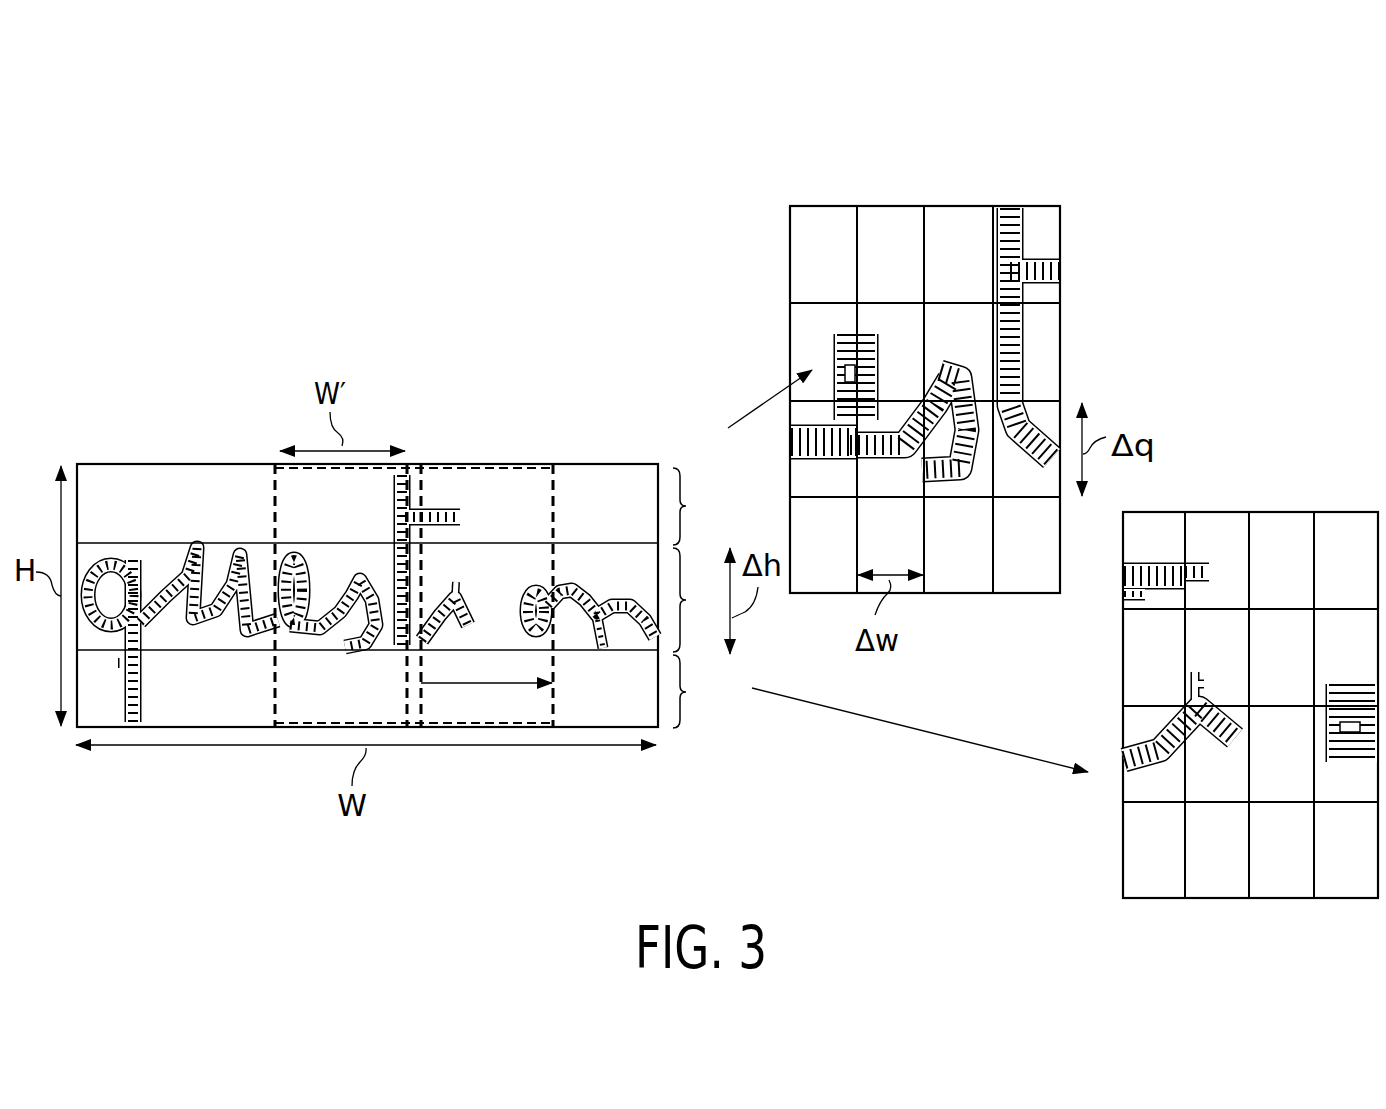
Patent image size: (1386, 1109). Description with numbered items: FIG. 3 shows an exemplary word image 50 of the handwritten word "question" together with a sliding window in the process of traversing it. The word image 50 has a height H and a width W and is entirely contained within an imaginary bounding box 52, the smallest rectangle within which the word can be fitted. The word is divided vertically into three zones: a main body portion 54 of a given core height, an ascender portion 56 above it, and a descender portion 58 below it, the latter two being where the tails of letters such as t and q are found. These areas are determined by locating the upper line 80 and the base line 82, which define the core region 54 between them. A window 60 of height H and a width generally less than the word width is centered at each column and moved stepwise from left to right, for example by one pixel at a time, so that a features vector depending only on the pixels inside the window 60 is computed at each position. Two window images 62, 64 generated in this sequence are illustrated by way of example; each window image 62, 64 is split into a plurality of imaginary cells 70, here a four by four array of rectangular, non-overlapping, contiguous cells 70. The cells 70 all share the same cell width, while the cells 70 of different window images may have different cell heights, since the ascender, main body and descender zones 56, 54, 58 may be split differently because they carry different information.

The word image 50 is at (447, 508).
The bounding box 52 is at (556, 483).
The main body portion 54 is at (692, 600).
The ascender portion 56 is at (692, 506).
The descender portion 58 is at (692, 691).
The window 60 is at (271, 680).
The window image 62 is at (826, 172).
The window image 64 is at (1220, 472).
The cells 70 is at (815, 270).
The upper line 80 is at (291, 543).
The base line 82 is at (318, 651).